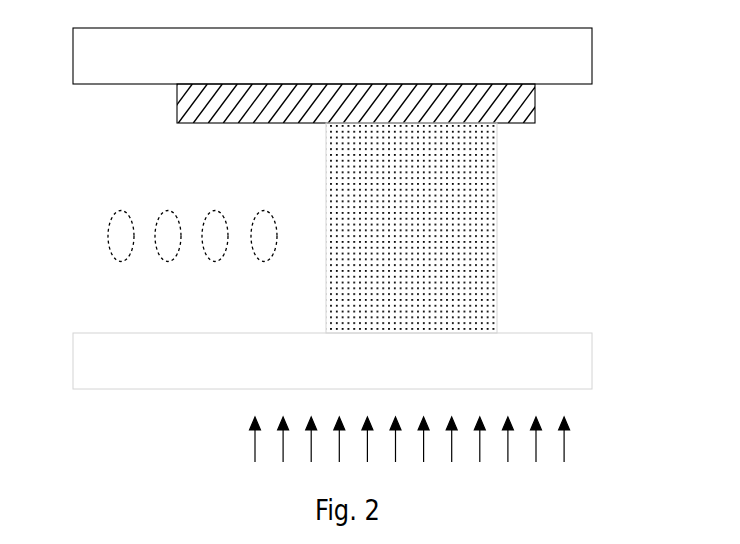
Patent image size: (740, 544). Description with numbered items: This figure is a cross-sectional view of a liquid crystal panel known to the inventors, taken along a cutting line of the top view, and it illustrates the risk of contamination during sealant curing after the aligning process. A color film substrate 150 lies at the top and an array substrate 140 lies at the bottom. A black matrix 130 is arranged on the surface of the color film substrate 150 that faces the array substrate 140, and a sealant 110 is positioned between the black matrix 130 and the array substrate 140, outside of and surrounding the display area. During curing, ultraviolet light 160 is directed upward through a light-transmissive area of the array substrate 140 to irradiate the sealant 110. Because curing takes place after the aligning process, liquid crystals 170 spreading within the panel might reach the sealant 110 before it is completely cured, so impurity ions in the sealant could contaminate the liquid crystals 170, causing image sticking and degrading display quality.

The sealant 110 is at (451, 221).
The black matrix 130 is at (527, 113).
The array substrate 140 is at (585, 376).
The color film substrate 150 is at (586, 69).
The ultraviolet light 160 is at (585, 434).
The liquid crystals 170 is at (112, 238).